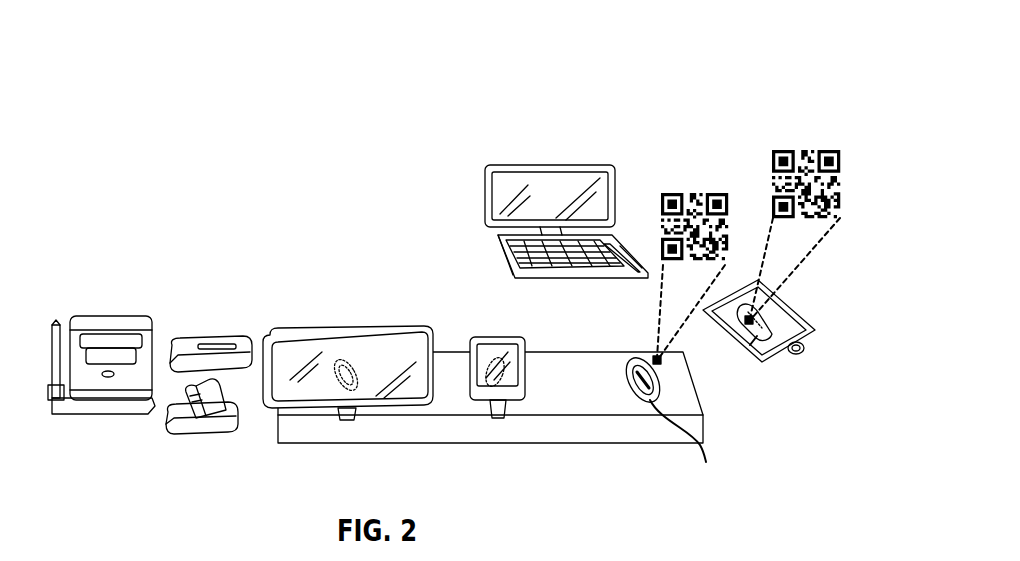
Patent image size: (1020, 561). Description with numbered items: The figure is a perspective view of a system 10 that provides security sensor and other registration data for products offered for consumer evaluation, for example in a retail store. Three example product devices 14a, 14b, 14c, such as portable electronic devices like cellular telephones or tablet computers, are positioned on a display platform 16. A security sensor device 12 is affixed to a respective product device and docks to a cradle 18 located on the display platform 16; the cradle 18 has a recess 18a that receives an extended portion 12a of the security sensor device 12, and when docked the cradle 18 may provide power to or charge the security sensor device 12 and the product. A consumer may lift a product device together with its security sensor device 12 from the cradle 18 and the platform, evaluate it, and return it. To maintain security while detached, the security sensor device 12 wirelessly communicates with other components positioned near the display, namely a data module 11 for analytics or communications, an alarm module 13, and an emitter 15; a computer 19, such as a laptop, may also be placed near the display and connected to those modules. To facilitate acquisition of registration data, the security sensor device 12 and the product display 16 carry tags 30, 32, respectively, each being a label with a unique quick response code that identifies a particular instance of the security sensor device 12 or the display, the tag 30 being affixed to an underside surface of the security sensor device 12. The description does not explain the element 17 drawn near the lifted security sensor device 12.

The system 10 is at (366, 142).
The data module 11 is at (212, 340).
The security sensor device 12 is at (358, 355).
The extended portion 12a is at (750, 345).
The alarm module 13 is at (118, 313).
The product device 14a is at (316, 330).
The product device 14b is at (495, 337).
The product device 14c is at (786, 278).
The emitter 15 is at (213, 436).
The display platform 16 is at (570, 350).
The loop 17 is at (800, 350).
The cradle 18 is at (638, 362).
The recess 18a is at (706, 462).
The computer 19 is at (575, 165).
The tag 30 is at (796, 150).
The tag 32 is at (690, 195).